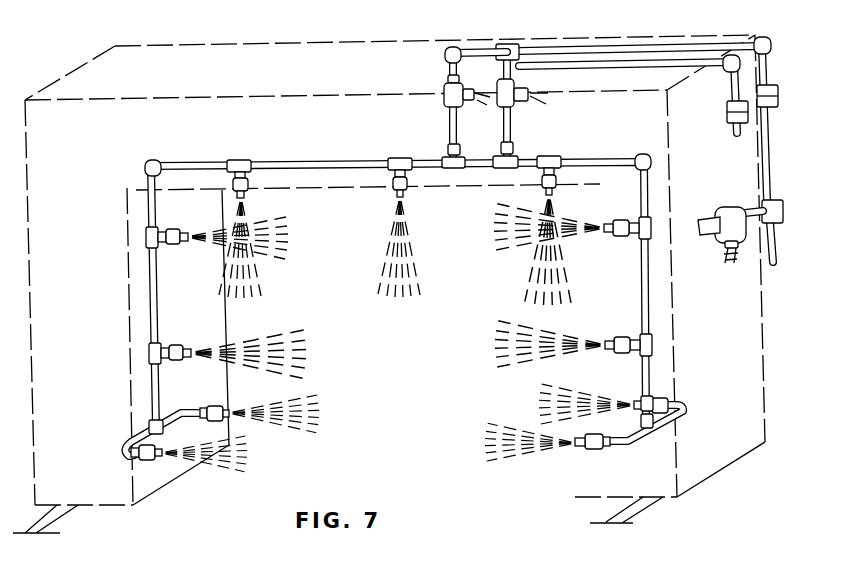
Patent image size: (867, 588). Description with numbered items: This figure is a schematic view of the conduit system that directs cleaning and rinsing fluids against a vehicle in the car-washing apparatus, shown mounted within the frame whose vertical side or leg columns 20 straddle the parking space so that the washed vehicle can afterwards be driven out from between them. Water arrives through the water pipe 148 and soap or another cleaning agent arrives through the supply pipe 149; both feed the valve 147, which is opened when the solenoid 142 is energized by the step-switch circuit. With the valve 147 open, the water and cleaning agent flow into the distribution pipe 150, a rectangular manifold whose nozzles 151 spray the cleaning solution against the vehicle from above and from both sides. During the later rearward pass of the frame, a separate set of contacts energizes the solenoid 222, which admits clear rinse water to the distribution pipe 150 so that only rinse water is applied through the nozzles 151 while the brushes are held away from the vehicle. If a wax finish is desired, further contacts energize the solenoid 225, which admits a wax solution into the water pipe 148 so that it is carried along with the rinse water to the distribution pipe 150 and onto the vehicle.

The vertical side columns 20 is at (773, 409).
The solenoid 142 is at (531, 104).
The valve 147 is at (516, 108).
The water pipe 148 is at (769, 70).
The supply pipe 149 is at (737, 86).
The distribution pipe 150 is at (597, 157).
The nozzles 151 is at (170, 233).
The solenoid 222 is at (447, 86).
The solenoid 225 is at (716, 245).